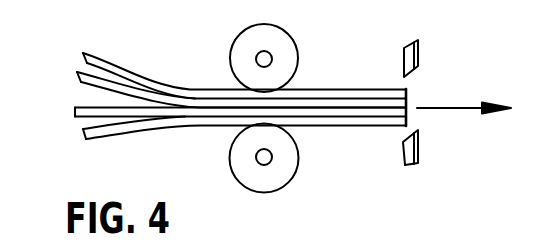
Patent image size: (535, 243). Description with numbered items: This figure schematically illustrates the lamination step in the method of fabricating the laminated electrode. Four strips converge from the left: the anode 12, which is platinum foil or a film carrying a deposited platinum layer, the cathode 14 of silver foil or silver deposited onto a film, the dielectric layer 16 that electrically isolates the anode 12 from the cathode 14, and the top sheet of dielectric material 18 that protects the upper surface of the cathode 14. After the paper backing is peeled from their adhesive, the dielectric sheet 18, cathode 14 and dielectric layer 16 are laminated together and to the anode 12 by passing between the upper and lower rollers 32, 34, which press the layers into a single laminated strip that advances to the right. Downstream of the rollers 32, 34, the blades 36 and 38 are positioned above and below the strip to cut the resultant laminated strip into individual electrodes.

The anode 12 is at (87, 138).
The cathode 14 is at (78, 77).
The dielectric layer 16 is at (76, 113).
The top dielectric sheet 18 is at (85, 53).
The roller 32 is at (284, 43).
The roller 34 is at (285, 174).
The blade 36 is at (418, 49).
The blade 38 is at (403, 160).